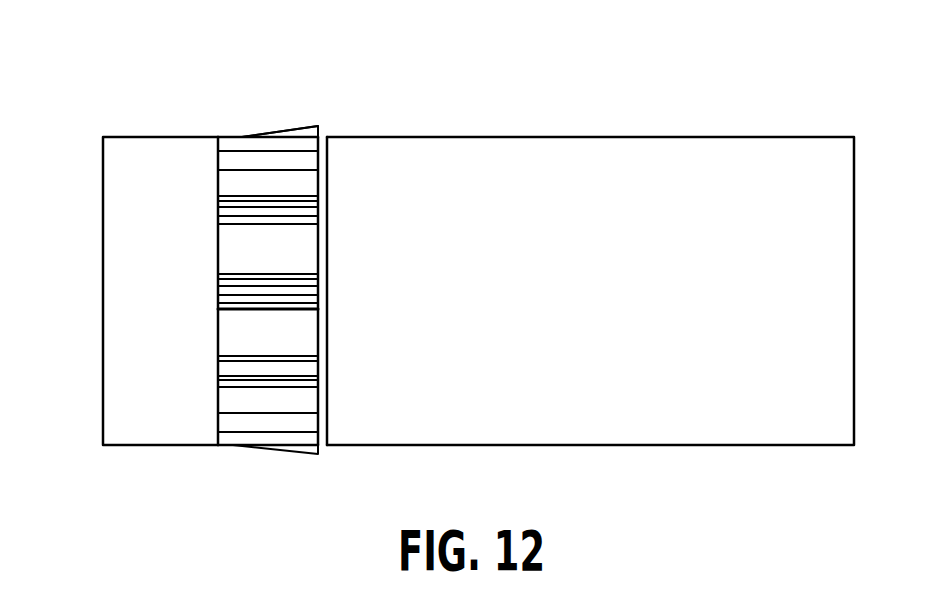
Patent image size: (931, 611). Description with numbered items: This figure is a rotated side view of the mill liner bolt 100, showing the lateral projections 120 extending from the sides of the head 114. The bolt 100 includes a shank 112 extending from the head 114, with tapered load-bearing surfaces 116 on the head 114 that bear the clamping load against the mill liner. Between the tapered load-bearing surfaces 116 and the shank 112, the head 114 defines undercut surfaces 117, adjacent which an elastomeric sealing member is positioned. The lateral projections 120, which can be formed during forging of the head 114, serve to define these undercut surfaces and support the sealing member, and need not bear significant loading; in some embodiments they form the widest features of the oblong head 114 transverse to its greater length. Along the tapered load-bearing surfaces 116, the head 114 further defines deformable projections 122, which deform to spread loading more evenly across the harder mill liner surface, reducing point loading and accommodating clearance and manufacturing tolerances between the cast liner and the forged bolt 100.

The mill liner bolt 100 is at (634, 55).
The shank 112 is at (727, 137).
The head 114 is at (114, 180).
The tapered load-bearing surfaces 116 is at (228, 253).
The undercut surfaces 117 is at (320, 133).
The lateral projections 120 is at (305, 124).
The deformable projections 122 is at (225, 375).